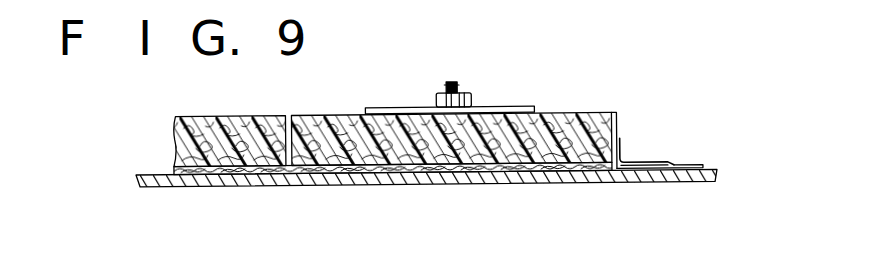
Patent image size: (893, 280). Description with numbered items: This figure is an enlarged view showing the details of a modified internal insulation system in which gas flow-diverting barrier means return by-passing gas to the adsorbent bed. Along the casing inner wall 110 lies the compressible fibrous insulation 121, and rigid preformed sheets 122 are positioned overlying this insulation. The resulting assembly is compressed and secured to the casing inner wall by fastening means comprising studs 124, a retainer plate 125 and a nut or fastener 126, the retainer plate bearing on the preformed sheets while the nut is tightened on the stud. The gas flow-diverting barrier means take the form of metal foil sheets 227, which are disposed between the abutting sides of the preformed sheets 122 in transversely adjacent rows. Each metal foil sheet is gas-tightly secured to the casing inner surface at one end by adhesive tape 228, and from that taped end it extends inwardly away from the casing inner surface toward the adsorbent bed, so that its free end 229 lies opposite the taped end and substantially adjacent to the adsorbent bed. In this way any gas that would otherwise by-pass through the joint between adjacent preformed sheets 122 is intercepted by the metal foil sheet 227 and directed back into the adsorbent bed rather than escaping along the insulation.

The base plate 110 is at (685, 180).
The compressible fibrous insulation 121 is at (345, 170).
The rigid preformed sheets 122 is at (299, 116).
The studs 124 is at (447, 87).
The retainer plate 125 is at (377, 108).
The nut or fastener 126 is at (473, 102).
The metal foil sheets 227 is at (625, 121).
The adhesive tape 228 is at (703, 160).
The free end 229 is at (617, 110).